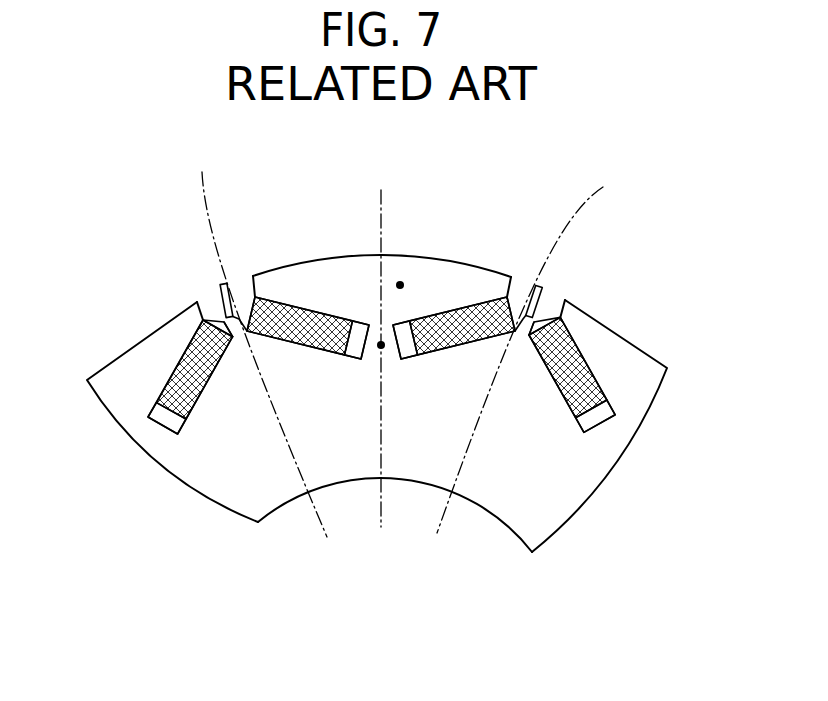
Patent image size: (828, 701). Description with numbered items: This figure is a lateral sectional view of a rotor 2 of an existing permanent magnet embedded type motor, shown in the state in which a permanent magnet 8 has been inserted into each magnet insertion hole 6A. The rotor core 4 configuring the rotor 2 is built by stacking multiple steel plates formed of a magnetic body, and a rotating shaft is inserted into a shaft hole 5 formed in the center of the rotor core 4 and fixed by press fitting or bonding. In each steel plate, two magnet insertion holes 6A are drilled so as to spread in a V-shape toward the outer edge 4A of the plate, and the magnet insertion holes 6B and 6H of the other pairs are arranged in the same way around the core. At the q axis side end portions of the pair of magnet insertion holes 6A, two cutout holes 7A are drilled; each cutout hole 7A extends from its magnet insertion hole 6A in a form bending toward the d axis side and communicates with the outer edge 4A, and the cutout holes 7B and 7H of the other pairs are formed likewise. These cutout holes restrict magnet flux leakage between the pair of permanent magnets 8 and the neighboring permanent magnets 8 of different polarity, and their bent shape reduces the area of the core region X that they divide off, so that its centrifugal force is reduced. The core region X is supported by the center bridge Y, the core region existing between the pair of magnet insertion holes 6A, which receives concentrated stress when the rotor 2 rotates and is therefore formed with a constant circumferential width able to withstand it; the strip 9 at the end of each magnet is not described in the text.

The rotor 2 is at (364, 452).
The rotor core 4 is at (537, 511).
The outer edge 4A is at (107, 361).
The shaft hole 5 is at (498, 521).
The magnet insertion hole 6A is at (322, 349).
The magnet insertion hole 6B is at (578, 412).
The magnet insertion hole 6H is at (212, 373).
The cutout hole 7A is at (240, 287).
The cutout hole 7B is at (552, 300).
The cutout hole 7H is at (207, 303).
The permanent magnet 8 is at (187, 353).
The insulator / coil end portion 9 is at (352, 358).
The d axis d is at (378, 203).
The q axis q is at (410, 340).
The core region X is at (400, 285).
The center bridge Y is at (381, 349).